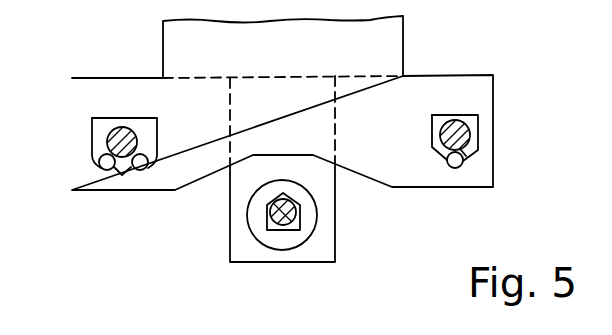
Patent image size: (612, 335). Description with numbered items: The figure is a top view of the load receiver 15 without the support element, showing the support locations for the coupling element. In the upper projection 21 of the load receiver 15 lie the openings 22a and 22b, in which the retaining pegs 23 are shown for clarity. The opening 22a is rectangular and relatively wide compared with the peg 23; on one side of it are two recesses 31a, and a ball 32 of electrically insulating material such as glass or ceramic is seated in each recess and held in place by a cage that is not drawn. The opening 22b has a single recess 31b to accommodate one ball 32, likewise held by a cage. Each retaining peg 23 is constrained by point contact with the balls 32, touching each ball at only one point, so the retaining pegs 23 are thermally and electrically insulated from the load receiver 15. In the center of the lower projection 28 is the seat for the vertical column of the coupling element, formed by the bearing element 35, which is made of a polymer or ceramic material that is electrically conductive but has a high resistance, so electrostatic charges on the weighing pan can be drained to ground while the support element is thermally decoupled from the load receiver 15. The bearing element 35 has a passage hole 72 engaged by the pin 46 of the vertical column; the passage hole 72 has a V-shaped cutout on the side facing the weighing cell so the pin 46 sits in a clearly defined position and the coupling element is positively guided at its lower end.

The load receiver 15 is at (290, 57).
The upper projection 21 is at (395, 147).
The opening 22a is at (103, 125).
The opening 22b is at (440, 120).
The retaining peg 23 is at (108, 138).
The lower projection 28 is at (240, 232).
The recess 31a is at (124, 174).
The recess 31b is at (466, 153).
The ball 32 is at (100, 169).
The bearing element 35 is at (273, 240).
The pin 46 is at (288, 224).
The passage hole 72 is at (291, 196).